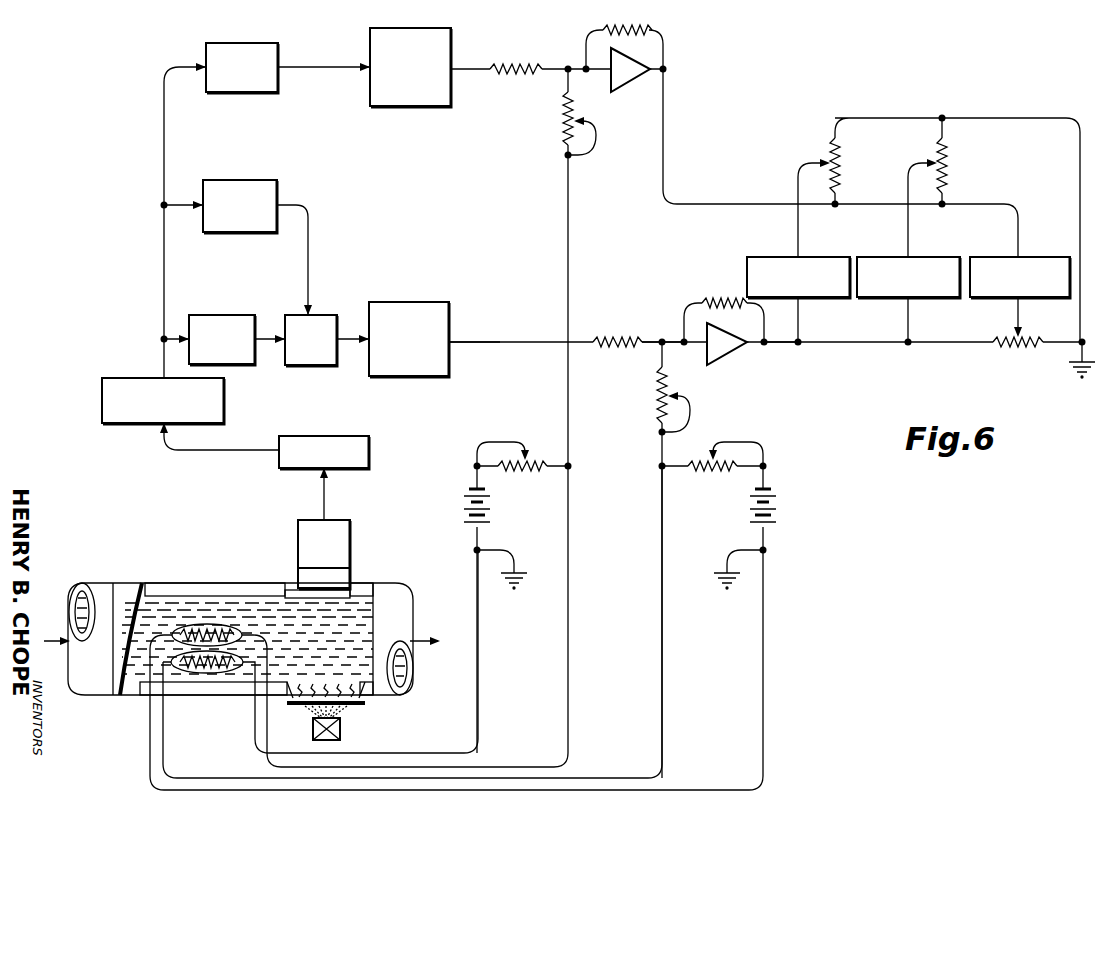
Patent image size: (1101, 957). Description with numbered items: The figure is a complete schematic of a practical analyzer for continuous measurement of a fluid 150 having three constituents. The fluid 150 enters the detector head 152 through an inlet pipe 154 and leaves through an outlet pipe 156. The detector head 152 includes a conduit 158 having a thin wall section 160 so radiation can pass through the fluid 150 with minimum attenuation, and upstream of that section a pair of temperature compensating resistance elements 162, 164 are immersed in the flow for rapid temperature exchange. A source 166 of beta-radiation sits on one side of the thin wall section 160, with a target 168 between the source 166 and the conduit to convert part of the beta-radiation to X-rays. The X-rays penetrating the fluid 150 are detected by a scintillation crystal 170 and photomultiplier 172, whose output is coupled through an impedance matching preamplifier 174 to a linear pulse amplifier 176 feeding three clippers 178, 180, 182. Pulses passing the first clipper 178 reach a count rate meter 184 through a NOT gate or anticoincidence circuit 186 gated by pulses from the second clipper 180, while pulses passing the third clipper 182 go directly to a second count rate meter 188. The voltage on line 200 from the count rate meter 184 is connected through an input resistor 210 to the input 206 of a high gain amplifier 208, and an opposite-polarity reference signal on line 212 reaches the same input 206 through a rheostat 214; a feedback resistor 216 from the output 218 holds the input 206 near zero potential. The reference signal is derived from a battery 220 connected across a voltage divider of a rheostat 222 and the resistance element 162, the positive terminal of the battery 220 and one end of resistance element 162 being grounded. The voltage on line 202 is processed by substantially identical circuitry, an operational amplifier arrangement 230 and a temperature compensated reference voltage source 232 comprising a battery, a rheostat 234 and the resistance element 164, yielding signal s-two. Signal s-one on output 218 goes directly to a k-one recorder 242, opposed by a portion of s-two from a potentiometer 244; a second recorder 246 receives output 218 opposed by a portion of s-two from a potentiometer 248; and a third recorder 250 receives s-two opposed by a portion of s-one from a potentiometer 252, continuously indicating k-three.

The fluid 150 is at (178, 606).
The detector head 152 is at (134, 583).
The inlet pipe 154 is at (96, 583).
The outlet pipe 156 is at (410, 603).
The conduit 158 is at (221, 583).
The thin wall section 160 is at (352, 590).
The temperature compensating resistance element 162 is at (247, 640).
The temperature compensating resistance element 164 is at (250, 664).
The source of beta-radiation 166 is at (341, 729).
The target 168 is at (366, 705).
The scintillation crystal 170 is at (300, 573).
The photomultiplier 172 is at (350, 537).
The impedance matching preamplifier 174 is at (369, 452).
The linear pulse amplifier 176 is at (136, 424).
The first clipper 178 is at (209, 315).
The second clipper 180 is at (251, 180).
The third clipper 182 is at (205, 43).
The count rate meter 184 is at (418, 302).
The NOT gate or anticoincidence circuit 186 is at (308, 365).
The second count rate meter 188 is at (374, 106).
The line 200 is at (480, 342).
The line 202 is at (470, 72).
The amplifier input 206 is at (652, 348).
The high gain amplifier 208 is at (728, 358).
The input resistor 210 is at (625, 336).
The line 212 is at (660, 508).
The rheostat 214 is at (655, 405).
The feedback resistor 216 is at (722, 302).
The amplifier output 218 is at (780, 348).
The battery 220 is at (778, 506).
The rheostat 222 is at (768, 462).
The operational amplifier arrangement 230 is at (706, 47).
The temperature compensated reference voltage source 232 is at (537, 516).
The rheostat 234 is at (517, 459).
The k1 recorder 242 is at (771, 257).
The potentiometer 244 is at (844, 160).
The second recorder 246 is at (889, 257).
The potentiometer 248 is at (950, 160).
The third recorder 250 is at (1002, 257).
The potentiometer 252 is at (1021, 348).